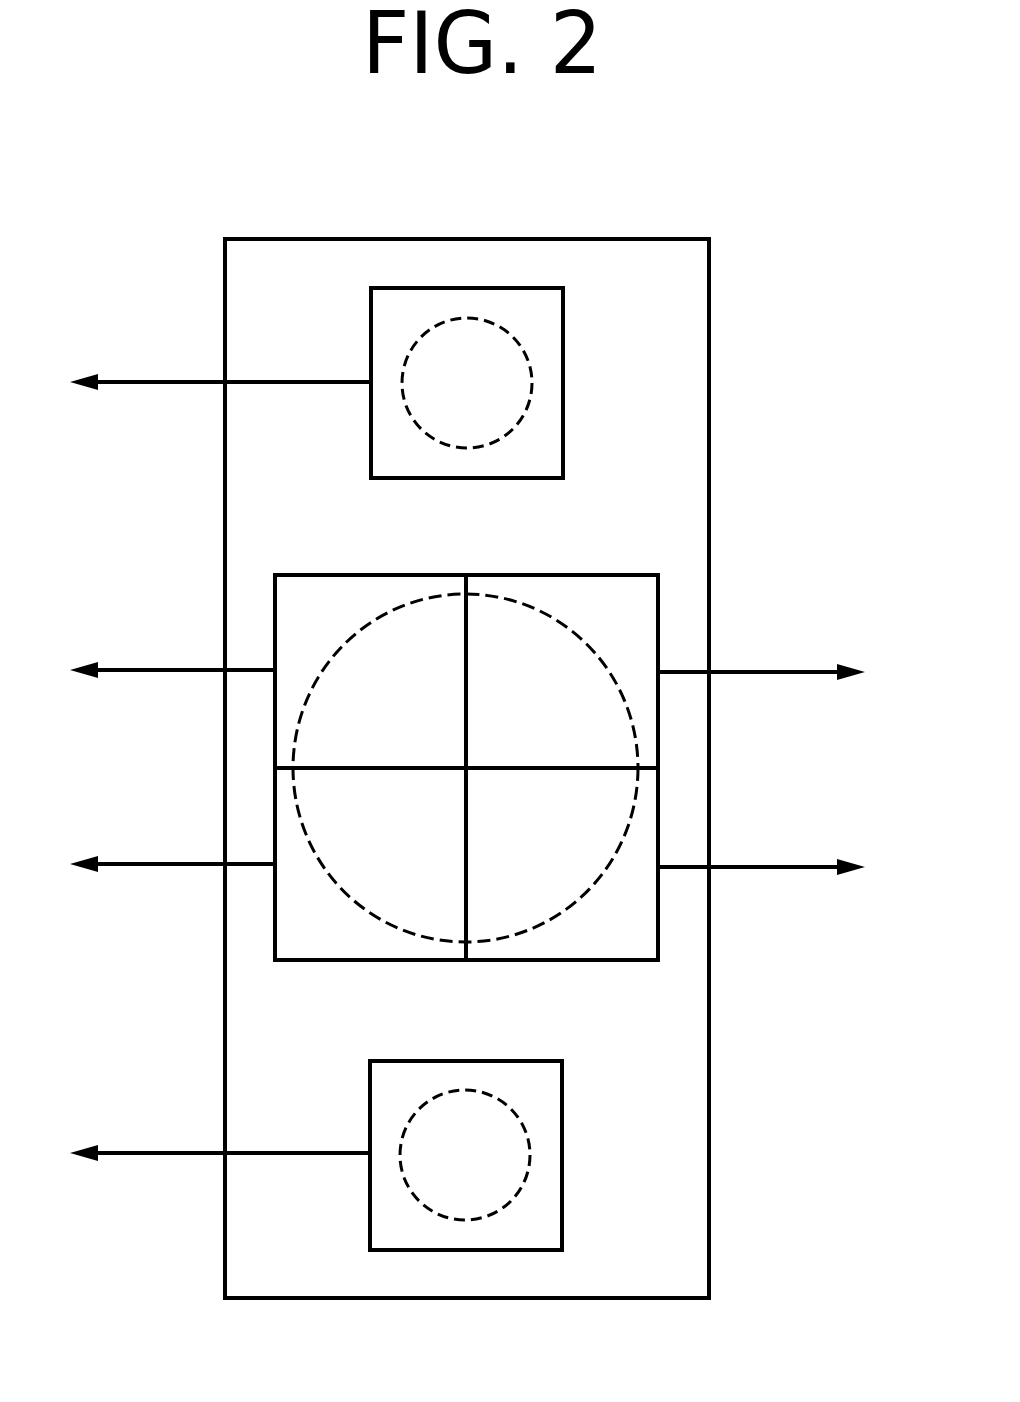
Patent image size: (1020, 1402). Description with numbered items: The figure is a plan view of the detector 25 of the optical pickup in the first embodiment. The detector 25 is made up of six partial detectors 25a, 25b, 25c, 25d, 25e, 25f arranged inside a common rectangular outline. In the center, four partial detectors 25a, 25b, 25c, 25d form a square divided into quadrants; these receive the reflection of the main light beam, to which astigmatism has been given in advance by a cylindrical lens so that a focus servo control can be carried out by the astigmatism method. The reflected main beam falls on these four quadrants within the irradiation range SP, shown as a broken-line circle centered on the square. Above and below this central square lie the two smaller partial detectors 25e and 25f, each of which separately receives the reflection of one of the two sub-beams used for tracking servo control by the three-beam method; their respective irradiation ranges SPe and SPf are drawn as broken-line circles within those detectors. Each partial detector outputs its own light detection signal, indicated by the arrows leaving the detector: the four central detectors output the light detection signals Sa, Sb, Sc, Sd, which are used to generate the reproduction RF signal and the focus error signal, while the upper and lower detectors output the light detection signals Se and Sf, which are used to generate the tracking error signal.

The detector 25 is at (709, 457).
The partial detector 25a is at (275, 612).
The partial detector 25b is at (658, 614).
The partial detector 25c is at (658, 942).
The partial detector 25d is at (275, 938).
The partial detector 25e is at (552, 318).
The partial detector 25f is at (552, 1087).
The irradiation range SP is at (630, 812).
The irradiation range SPe is at (535, 387).
The irradiation range SPf is at (535, 1160).
The light detection signal Sa is at (155, 671).
The light detection signal Sb is at (795, 673).
The light detection signal Sc is at (795, 868).
The light detection signal Sd is at (155, 865).
The light detection signal Se is at (155, 383).
The light detection signal Sf is at (155, 1154).